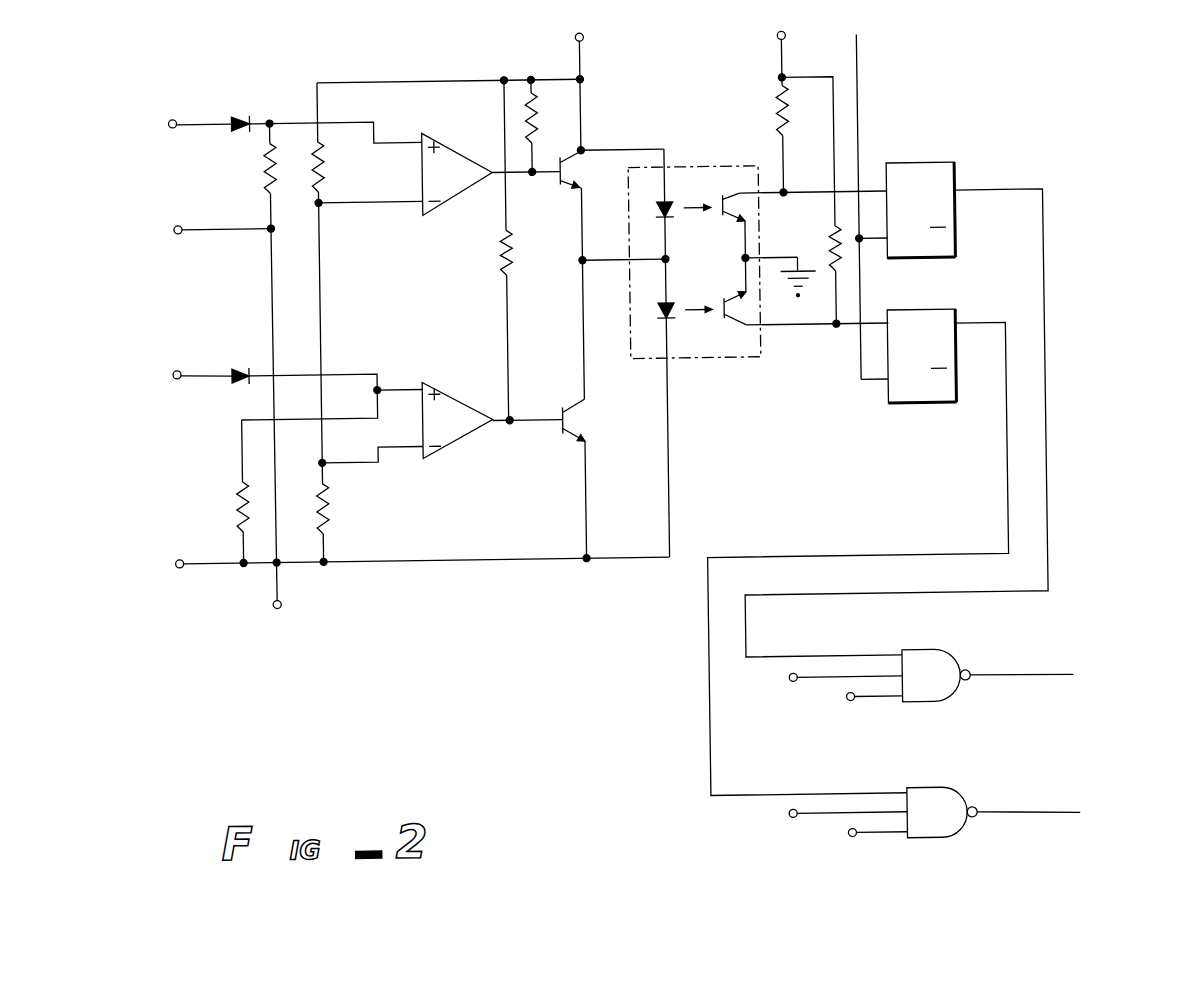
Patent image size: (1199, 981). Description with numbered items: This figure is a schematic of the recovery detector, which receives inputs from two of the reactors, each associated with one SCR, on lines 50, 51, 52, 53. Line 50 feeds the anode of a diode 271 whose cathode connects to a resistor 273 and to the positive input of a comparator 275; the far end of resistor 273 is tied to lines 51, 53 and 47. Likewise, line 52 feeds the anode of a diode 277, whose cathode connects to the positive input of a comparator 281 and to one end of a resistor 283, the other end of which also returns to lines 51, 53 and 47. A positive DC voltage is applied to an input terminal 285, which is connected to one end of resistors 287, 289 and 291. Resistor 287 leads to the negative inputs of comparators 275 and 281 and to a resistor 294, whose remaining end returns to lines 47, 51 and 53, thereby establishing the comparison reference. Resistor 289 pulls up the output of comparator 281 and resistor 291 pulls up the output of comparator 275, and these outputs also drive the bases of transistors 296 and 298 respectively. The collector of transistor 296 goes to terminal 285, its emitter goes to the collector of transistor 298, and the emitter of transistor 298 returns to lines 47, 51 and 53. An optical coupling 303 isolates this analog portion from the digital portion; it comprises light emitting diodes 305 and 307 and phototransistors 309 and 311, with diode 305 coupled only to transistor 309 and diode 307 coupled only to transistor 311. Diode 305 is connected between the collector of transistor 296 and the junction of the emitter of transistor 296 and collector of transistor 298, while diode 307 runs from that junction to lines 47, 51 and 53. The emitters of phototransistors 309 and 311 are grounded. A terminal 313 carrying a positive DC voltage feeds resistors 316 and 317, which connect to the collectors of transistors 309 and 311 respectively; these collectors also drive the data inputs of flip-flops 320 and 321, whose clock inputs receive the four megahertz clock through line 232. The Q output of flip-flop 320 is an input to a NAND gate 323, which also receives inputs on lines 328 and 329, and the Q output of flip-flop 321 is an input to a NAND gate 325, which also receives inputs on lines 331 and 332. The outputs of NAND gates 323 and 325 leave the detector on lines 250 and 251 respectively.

The line 47 is at (256, 423).
The line 50 is at (201, 121).
The line 51 is at (208, 222).
The line 52 is at (204, 364).
The line 53 is at (212, 562).
The line 232 is at (864, 66).
The line 250 is at (1010, 680).
The line 251 is at (1022, 816).
The diode 271 is at (252, 118).
The resistor 273 is at (262, 158).
The comparator 275 is at (440, 141).
The diode 277 is at (252, 368).
The comparator 281 is at (434, 382).
The resistor 283 is at (238, 490).
The input terminal 285 is at (587, 38).
The resistor 287 is at (324, 154).
The resistor 289 is at (502, 248).
The resistor 291 is at (540, 132).
The resistor 294 is at (330, 506).
The transistor 296 is at (562, 182).
The transistor 298 is at (564, 434).
The optical coupling 303 is at (738, 168).
The light emitting diode 305 is at (669, 222).
The light emitting diode 307 is at (669, 322).
The phototransistor 309 is at (738, 228).
The phototransistor 311 is at (722, 306).
The terminal 313 is at (780, 37).
The resistor 316 is at (778, 96).
The resistor 317 is at (830, 238).
The flip-flop 320 is at (921, 167).
The flip-flop 321 is at (919, 407).
The NAND gate 323 is at (956, 696).
The NAND gate 325 is at (957, 837).
The line 328 is at (814, 682).
The line 329 is at (869, 704).
The line 331 is at (818, 818).
The line 332 is at (867, 838).